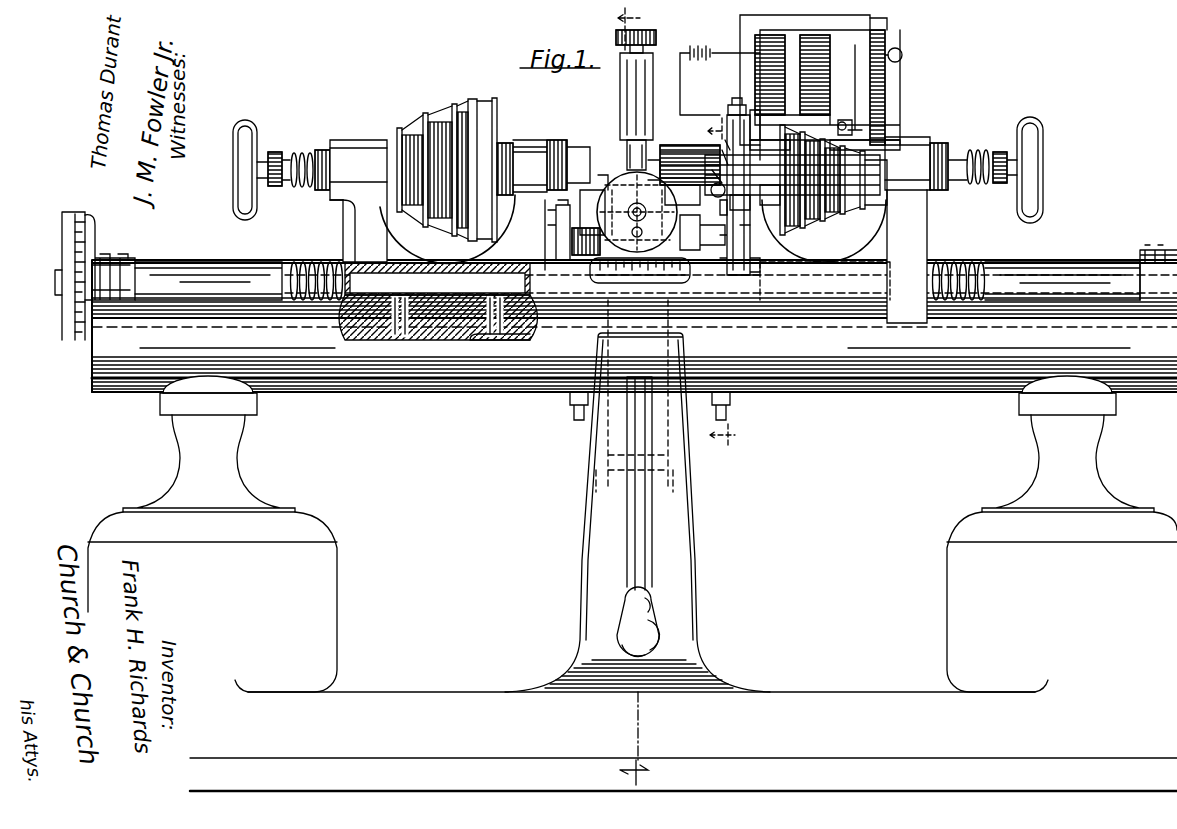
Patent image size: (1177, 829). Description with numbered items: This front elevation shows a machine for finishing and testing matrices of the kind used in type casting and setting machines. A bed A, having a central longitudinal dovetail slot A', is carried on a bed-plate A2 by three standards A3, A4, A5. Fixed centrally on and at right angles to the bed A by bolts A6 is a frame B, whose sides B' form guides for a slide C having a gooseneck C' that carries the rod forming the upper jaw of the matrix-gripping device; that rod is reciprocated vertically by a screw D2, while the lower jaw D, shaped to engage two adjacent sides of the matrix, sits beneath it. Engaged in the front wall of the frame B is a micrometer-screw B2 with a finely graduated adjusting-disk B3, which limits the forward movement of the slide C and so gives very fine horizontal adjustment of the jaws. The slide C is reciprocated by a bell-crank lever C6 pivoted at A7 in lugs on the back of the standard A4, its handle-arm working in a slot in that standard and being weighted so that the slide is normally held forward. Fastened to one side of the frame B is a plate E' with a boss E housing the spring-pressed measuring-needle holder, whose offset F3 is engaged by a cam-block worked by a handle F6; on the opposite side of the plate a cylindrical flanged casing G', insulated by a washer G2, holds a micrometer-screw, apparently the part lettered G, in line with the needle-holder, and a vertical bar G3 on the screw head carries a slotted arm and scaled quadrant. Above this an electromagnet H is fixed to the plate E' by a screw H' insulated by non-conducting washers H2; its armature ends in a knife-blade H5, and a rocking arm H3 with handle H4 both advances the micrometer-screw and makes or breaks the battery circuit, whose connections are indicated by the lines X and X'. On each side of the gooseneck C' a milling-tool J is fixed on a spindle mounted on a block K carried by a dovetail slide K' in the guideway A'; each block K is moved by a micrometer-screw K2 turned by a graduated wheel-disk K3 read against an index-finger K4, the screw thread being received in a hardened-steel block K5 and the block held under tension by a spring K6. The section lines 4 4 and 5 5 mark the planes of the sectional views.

The bed A is at (634, 342).
The dovetail slot A' is at (635, 339).
The bed-plate A2 is at (424, 700).
The standard A3 is at (330, 580).
The standard A4 is at (695, 575).
The standard A5 is at (965, 598).
The bolts A6 is at (560, 390).
The pivot A7 is at (610, 462).
The frame B is at (608, 237).
The sides of frame B' is at (583, 196).
The micrometer-screw B2 is at (557, 235).
The adjusting-disk B3 is at (600, 175).
The slide C is at (586, 234).
The gooseneck C' is at (651, 232).
The bell-crank lever C6 is at (628, 440).
The lower jaw D is at (640, 118).
The screw D2 is at (658, 40).
The boss E is at (690, 154).
The plate E' is at (809, 281).
The offset F3 is at (740, 195).
The handle F6 is at (740, 225).
The right cone pulley G is at (843, 192).
The cylindrical flanged casing G' is at (792, 182).
The washer G2 is at (770, 133).
The vertical arm G3 is at (875, 140).
The electromagnet H is at (820, 83).
The screw H' is at (747, 111).
The non-conducting washers H2 is at (728, 108).
The rocking arm H3 is at (852, 122).
The handle H4 is at (903, 56).
The knife-blade end H5 is at (888, 38).
The milling-tool J is at (662, 165).
The block K is at (638, 220).
The dovetail slide K' is at (336, 312).
The micrometer-screw K2 is at (522, 262).
The wheel-disk K3 is at (85, 218).
The index-finger K4 is at (95, 237).
The hardened-steel block K5 is at (1160, 250).
The spring K6 is at (310, 283).
The battery connection lines X is at (720, 80).
The wire connection X' is at (880, 87).
The section line 4 4 is at (633, 394).
The section line 5 5 is at (721, 276).